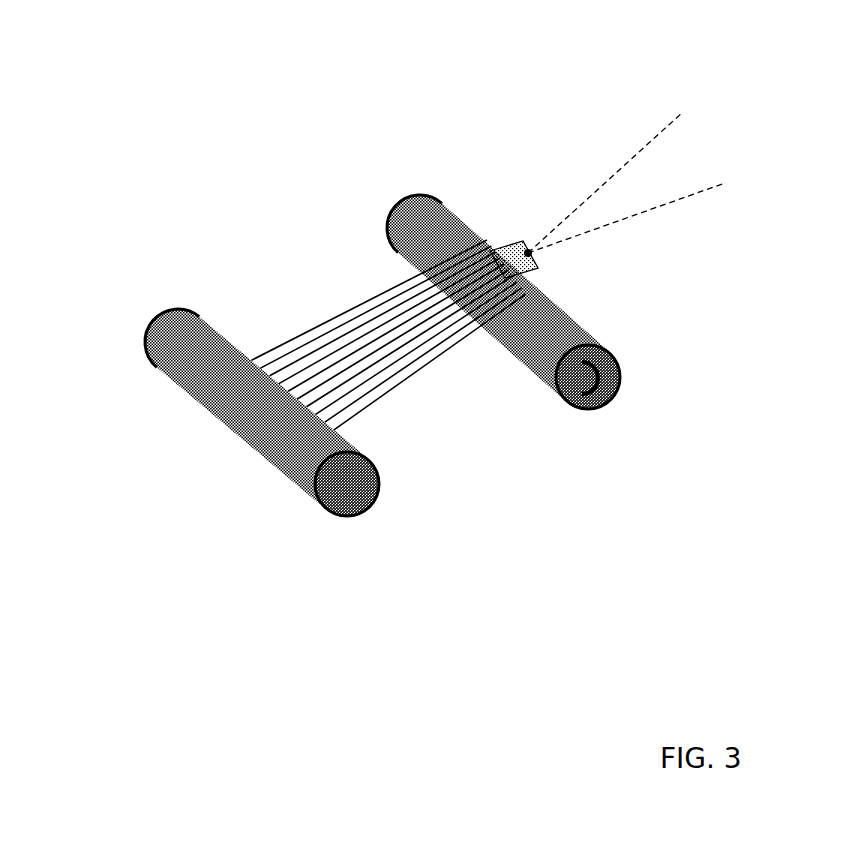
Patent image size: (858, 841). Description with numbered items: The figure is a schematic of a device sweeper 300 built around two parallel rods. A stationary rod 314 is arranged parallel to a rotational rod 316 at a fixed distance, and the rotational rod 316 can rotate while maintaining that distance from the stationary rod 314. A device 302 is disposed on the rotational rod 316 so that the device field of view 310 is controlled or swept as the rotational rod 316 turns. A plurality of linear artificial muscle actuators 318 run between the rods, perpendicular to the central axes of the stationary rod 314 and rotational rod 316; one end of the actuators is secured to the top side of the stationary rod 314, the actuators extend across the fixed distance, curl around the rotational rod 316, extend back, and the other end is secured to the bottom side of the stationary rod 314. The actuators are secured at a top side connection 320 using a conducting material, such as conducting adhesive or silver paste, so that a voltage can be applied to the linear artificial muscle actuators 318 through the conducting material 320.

The device sweeper 300 is at (196, 101).
The device 302 is at (512, 240).
The device field of view 310 is at (668, 205).
The stationary rod 314 is at (368, 515).
The rotational rod 316 is at (610, 402).
The linear artificial muscle actuators 318 is at (360, 306).
The top side connection 320 is at (257, 388).